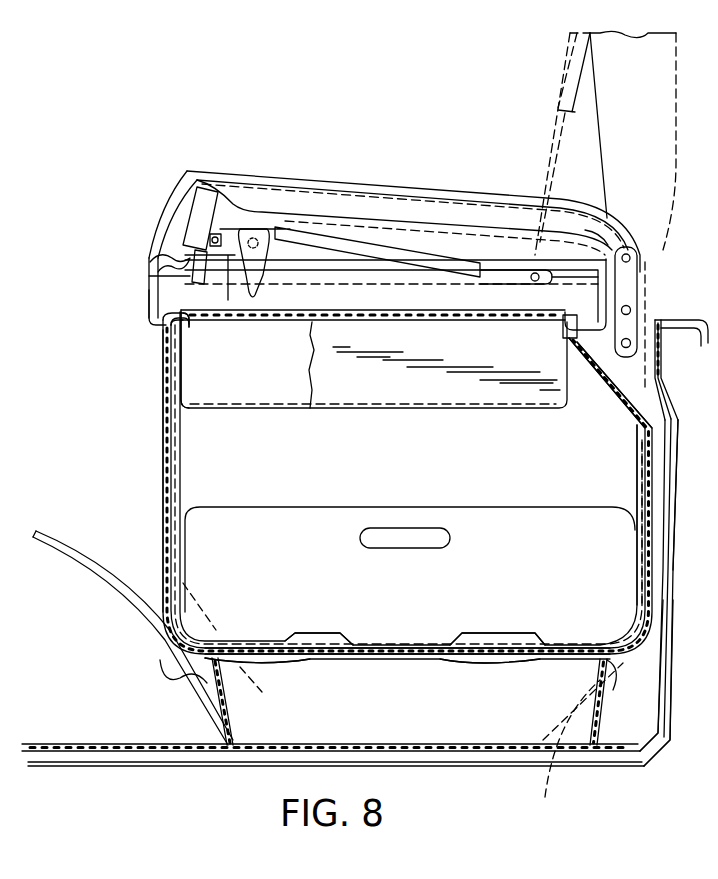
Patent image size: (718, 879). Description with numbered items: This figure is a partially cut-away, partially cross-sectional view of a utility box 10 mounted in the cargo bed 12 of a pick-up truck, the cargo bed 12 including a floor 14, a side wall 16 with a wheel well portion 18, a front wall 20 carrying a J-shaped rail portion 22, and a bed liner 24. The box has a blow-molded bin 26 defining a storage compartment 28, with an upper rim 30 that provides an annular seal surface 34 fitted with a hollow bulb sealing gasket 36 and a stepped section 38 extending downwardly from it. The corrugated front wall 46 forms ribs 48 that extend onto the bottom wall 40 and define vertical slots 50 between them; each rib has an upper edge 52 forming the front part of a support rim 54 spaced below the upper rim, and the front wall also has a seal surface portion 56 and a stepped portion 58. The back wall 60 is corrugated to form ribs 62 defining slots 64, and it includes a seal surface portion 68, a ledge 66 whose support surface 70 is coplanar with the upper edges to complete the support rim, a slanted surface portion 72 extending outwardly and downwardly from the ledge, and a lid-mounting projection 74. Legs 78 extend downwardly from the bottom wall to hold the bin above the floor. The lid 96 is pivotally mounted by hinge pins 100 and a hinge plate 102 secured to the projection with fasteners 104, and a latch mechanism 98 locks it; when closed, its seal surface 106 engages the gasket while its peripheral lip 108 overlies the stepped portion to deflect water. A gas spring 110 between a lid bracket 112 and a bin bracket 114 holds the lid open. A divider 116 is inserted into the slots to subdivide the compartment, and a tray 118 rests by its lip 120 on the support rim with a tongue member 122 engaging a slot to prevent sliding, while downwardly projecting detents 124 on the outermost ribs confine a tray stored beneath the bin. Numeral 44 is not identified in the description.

The utility box 10 is at (326, 135).
The cargo bed 12 is at (674, 706).
The floor 14 is at (55, 747).
The side wall 16 is at (135, 317).
The wheel well portion 18 is at (73, 525).
The front wall 20 is at (677, 488).
The J-shaped rail portion 22 is at (700, 337).
The bed liner 24 is at (148, 746).
The bin 26 is at (160, 465).
The storage compartment 28 is at (208, 425).
The upper rim 30 is at (201, 360).
The seal surface 34 is at (587, 222).
The sealing gasket 36 is at (637, 273).
The stepped section 38 is at (150, 300).
The bottom wall 40 is at (383, 657).
The bottom liner 44 is at (442, 662).
The front wall 46 is at (165, 545).
The ribs 48 is at (182, 472).
The vertical slots 50 is at (182, 498).
The upper edge 52 is at (172, 352).
The support rim 54 is at (568, 297).
The seal surface portion 56 is at (212, 250).
The stepped portion 58 is at (149, 276).
The back wall 60 is at (654, 454).
The ribs 62 is at (633, 463).
The vertical slots 64 is at (641, 492).
The ledge 66 is at (420, 648).
The seal surface portion 68 is at (606, 232).
The support surface 70 is at (560, 322).
The slanted surface portion 72 is at (605, 382).
The lid-mounting projection 74 is at (650, 395).
The legs 78 is at (549, 782).
The lid 96 is at (395, 182).
The latch mechanism 98 is at (182, 192).
The hinge pins 100 is at (630, 247).
The hinge plate 102 is at (634, 293).
The fasteners 104 is at (648, 312).
The seal surface 106 is at (194, 284).
The peripheral lip 108 is at (155, 268).
The gas spring 110 is at (432, 263).
The bracket 112 is at (263, 283).
The bracket 114 is at (498, 282).
The divider 116 is at (345, 498).
The tray 118 is at (445, 410).
The lip 120 is at (493, 320).
The tongue member 122 is at (170, 335).
The detents 124 is at (305, 660).